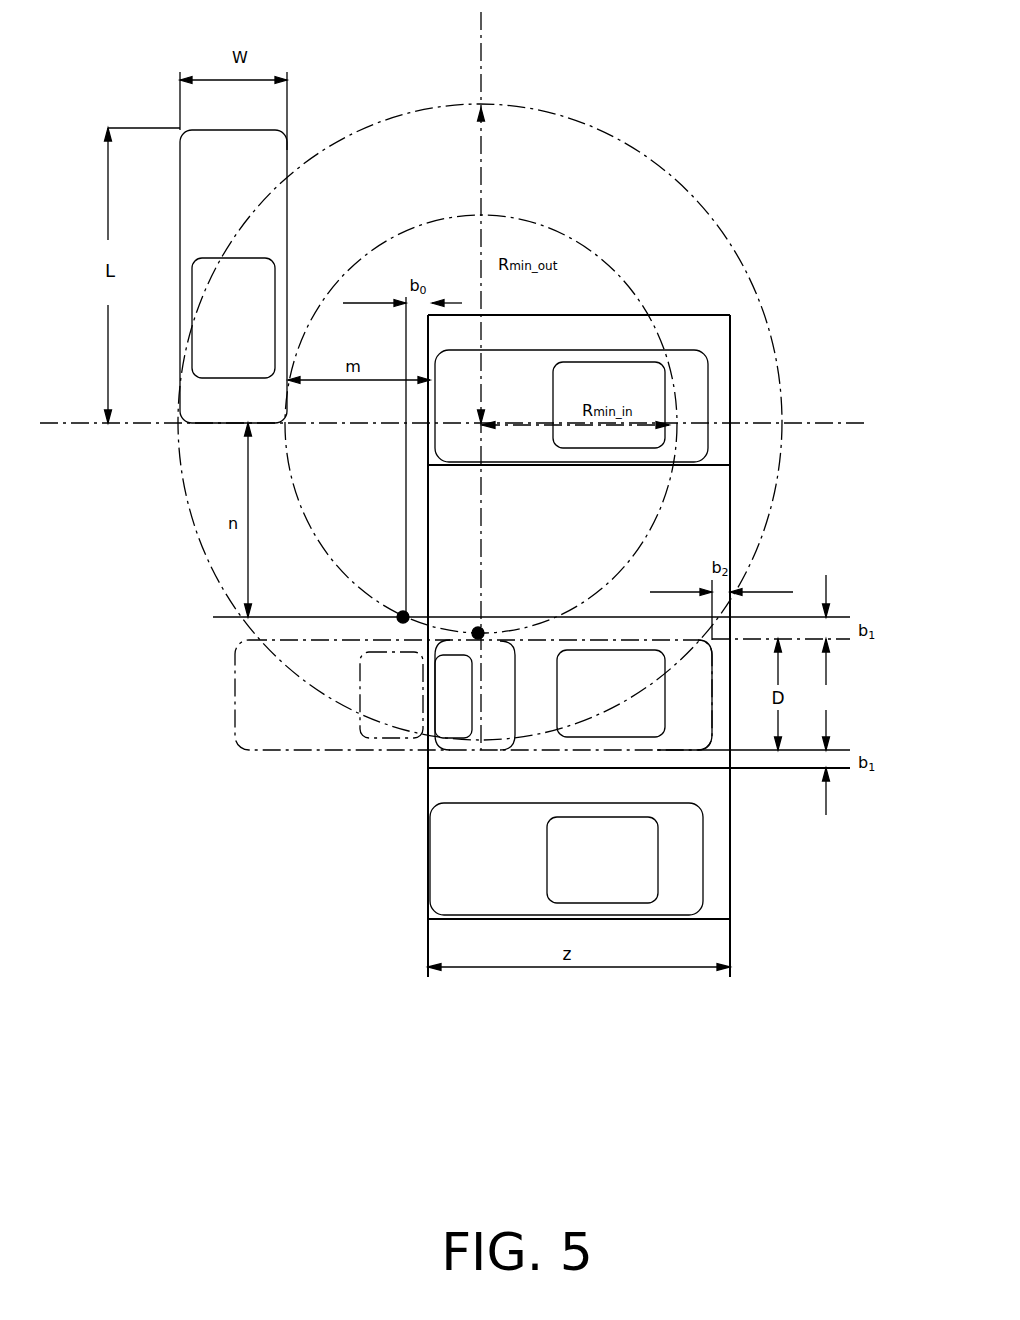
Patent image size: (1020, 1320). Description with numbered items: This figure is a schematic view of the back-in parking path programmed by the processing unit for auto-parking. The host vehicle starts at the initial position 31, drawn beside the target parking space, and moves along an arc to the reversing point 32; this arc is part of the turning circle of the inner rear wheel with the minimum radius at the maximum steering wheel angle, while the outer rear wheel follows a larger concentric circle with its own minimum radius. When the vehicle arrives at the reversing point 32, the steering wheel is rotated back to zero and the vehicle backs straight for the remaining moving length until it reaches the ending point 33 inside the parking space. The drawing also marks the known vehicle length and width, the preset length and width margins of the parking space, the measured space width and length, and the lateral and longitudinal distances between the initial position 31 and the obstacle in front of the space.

The initial position 31 is at (288, 148).
The reversing point 32 is at (262, 752).
The ending point 33 is at (708, 732).